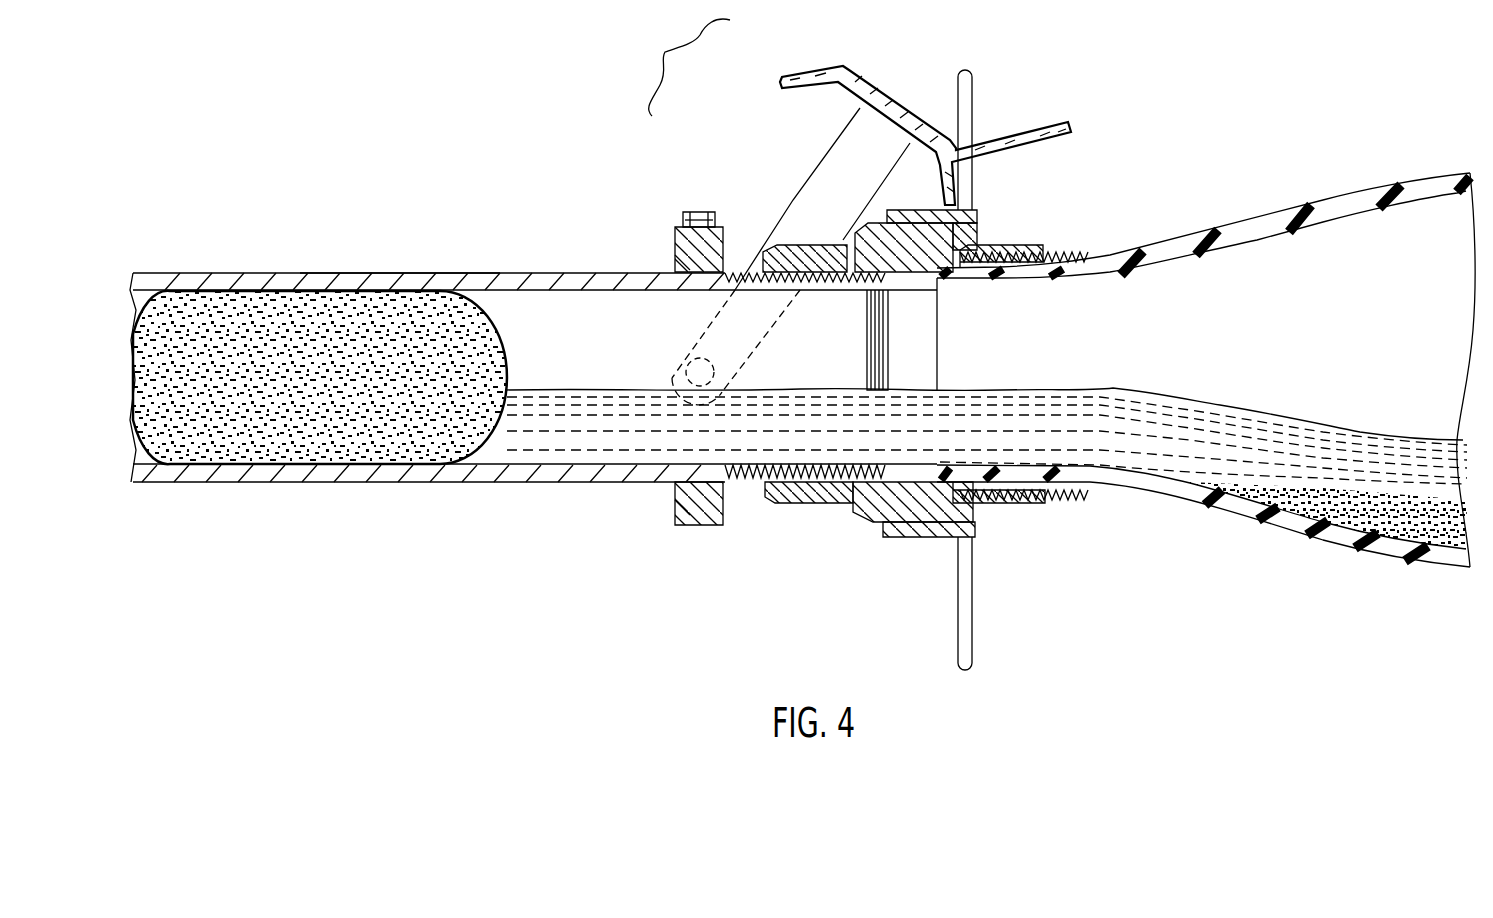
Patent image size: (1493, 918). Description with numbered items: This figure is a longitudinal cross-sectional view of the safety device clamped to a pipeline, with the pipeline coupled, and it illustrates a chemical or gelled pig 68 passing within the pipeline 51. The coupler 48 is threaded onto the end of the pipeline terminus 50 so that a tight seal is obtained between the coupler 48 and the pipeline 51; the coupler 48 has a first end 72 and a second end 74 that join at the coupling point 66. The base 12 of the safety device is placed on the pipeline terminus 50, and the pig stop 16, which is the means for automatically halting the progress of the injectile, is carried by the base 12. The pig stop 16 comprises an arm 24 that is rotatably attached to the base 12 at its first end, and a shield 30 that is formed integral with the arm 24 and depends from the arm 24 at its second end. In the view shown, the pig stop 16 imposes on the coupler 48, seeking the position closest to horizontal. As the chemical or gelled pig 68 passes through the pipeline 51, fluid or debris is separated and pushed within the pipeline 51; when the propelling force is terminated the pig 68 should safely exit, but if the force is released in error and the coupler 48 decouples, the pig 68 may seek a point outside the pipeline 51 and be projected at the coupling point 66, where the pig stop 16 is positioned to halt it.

The base 12 is at (675, 520).
The pig stop 16 is at (683, 67).
The arm 24 is at (795, 228).
The shield 30 is at (880, 89).
The coupler 48 is at (986, 223).
The pipeline terminus 50 is at (585, 333).
The pipeline 51 is at (347, 274).
The coupling point 66 is at (963, 225).
The chemical or gelled pig 68 is at (325, 440).
The first end of coupler 72 is at (872, 232).
The second end of coupler 74 is at (985, 230).